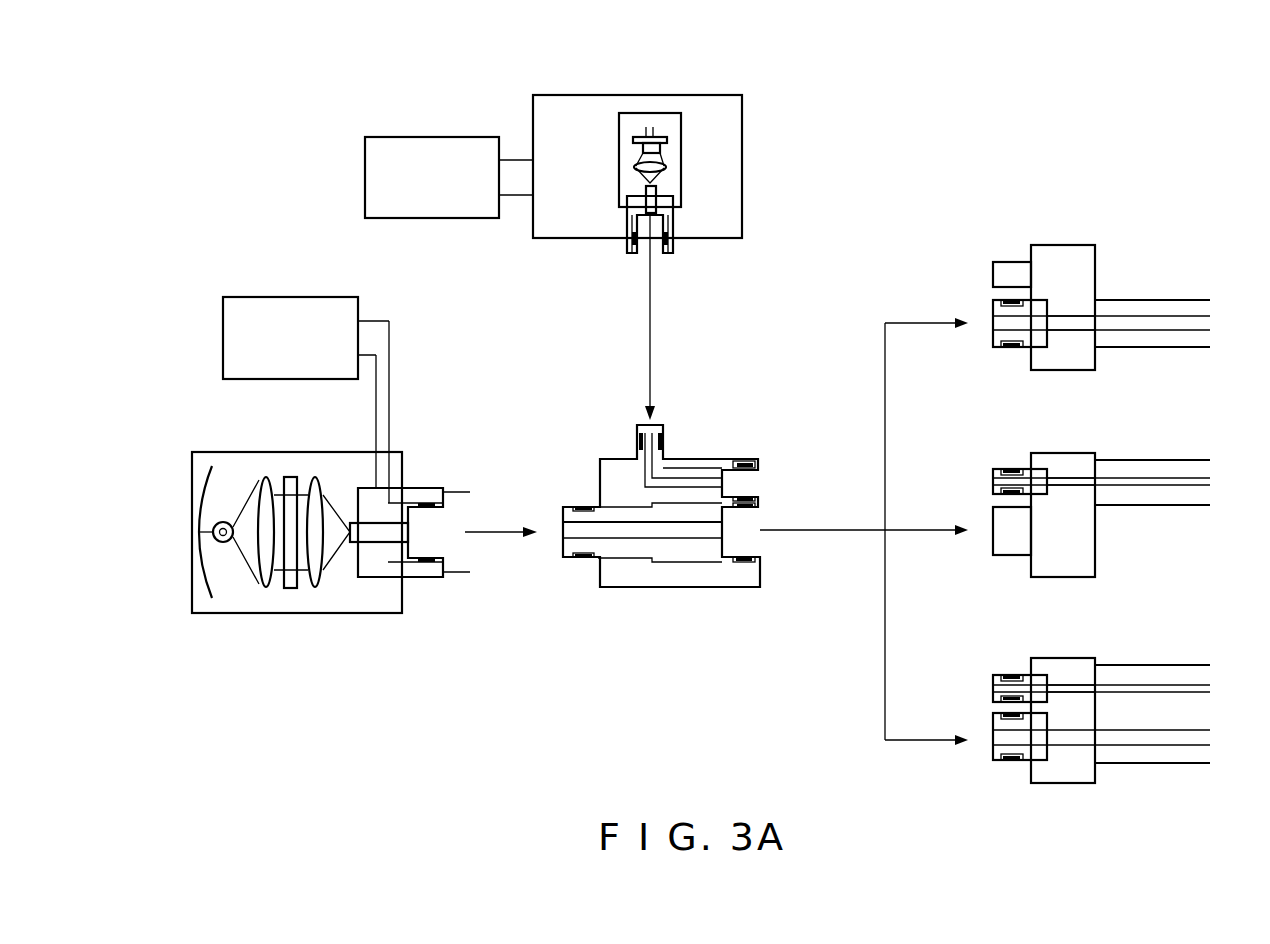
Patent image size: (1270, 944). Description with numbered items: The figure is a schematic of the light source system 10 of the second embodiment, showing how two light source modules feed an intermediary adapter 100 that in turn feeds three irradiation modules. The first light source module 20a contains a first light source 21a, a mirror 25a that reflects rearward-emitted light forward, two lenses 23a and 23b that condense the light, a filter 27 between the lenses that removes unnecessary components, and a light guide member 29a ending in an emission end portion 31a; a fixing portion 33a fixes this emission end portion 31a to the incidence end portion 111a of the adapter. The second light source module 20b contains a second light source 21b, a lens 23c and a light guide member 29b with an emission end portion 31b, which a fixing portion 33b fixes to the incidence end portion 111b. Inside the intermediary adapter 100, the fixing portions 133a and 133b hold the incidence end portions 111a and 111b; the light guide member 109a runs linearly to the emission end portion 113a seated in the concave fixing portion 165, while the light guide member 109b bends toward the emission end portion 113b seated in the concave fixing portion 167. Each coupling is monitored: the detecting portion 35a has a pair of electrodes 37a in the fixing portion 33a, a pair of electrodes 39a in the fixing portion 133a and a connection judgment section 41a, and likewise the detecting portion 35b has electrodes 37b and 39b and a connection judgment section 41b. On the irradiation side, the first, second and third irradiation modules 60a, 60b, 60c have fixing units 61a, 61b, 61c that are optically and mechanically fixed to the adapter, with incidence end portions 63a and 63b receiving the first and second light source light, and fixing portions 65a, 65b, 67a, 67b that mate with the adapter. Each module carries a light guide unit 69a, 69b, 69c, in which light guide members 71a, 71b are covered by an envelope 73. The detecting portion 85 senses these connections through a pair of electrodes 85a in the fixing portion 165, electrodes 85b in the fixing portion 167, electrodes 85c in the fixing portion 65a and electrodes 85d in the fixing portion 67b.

The endoscope system 10 is at (882, 172).
The first light source module 20a is at (188, 420).
The second light source module 20b is at (674, 86).
The first light source 21a is at (228, 544).
The second light source 21b is at (634, 142).
The lens 23a is at (262, 480).
The lens 23b is at (320, 480).
The lens 23c is at (635, 167).
The mirror 25a is at (201, 500).
The filter 27 is at (290, 477).
The light guide member 29a is at (370, 542).
The light guide member 29b is at (646, 198).
The emission end portion 31a is at (404, 539).
The emission end portion 31b is at (669, 215).
The fixing portion 33a is at (426, 570).
The fixing portion 33b is at (670, 243).
The detecting portion 35a is at (317, 297).
The detecting portion 35b is at (467, 137).
The pair of electrodes 37a is at (426, 556).
The pair of electrodes 37b is at (660, 233).
The pair of electrodes 39a is at (576, 555).
The pair of electrodes 39b is at (660, 432).
The connection judgment section 41a is at (290, 338).
The connection judgment section 41b is at (432, 177).
The first irradiation module 60a is at (1072, 504).
The second irradiation module 60b is at (1067, 534).
The third irradiation module 60c is at (1101, 700).
The first fixing unit 61a is at (1076, 245).
The second fixing unit 61b is at (1078, 453).
The third fixing unit 61c is at (1078, 658).
The incidence end portion 63a is at (1000, 317).
The incidence end portion 63b is at (1000, 481).
The fixing portion 65a is at (1000, 338).
The dummy portion 65b is at (998, 536).
The projection portion 67a is at (1014, 262).
The fixing portion 67b is at (1000, 472).
The first light guide unit 69a is at (1178, 300).
The second light guide unit 69b is at (1150, 460).
The third light guide unit 69c is at (1128, 764).
The first light guide member 71a is at (1125, 320).
The second light guide 71b is at (1178, 482).
The envelope 73 is at (1205, 298).
The detecting portion 85 is at (804, 416).
The pair of electrodes 85a is at (751, 563).
The pair of electrodes 85b is at (755, 466).
The pair of electrodes 85c is at (1010, 344).
The pair of electrodes 85d is at (1012, 491).
The intermediary adapter 100 is at (661, 568).
The light guide member 109a is at (644, 540).
The light guide member 109b is at (682, 480).
The incidence end portion 111a is at (563, 537).
The incidence end portion 111b is at (642, 426).
The emission end portion 113a is at (728, 538).
The emission end portion 113b is at (734, 490).
The fixing portion 133a is at (578, 560).
The fixing portion 133b is at (637, 451).
The concave fixing portion 165 is at (750, 582).
The concave fixing portion 167 is at (739, 460).